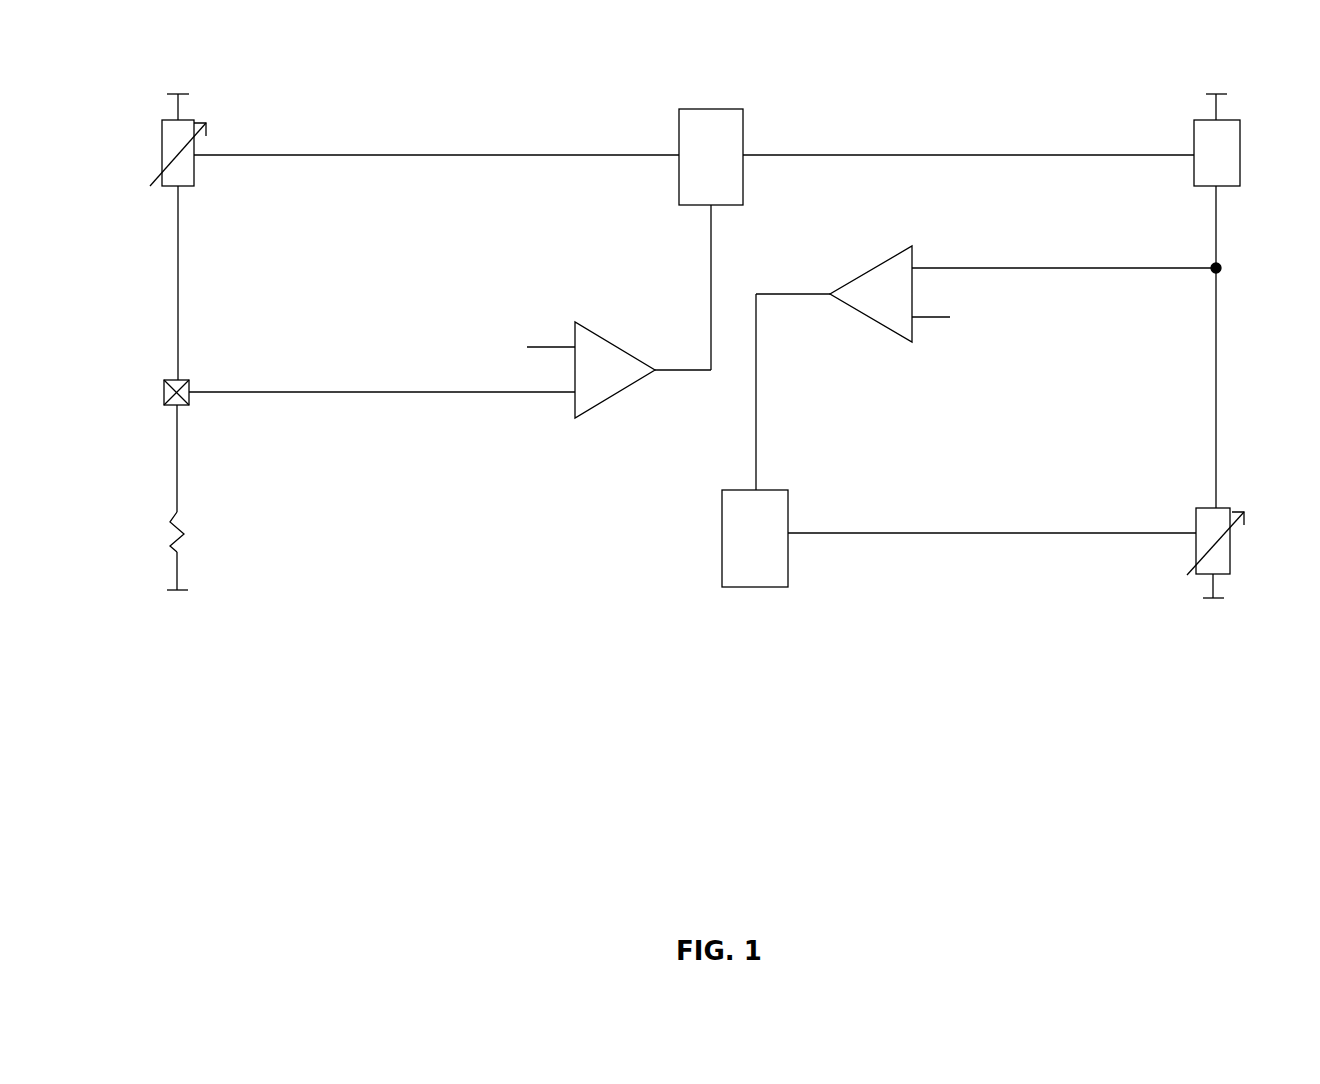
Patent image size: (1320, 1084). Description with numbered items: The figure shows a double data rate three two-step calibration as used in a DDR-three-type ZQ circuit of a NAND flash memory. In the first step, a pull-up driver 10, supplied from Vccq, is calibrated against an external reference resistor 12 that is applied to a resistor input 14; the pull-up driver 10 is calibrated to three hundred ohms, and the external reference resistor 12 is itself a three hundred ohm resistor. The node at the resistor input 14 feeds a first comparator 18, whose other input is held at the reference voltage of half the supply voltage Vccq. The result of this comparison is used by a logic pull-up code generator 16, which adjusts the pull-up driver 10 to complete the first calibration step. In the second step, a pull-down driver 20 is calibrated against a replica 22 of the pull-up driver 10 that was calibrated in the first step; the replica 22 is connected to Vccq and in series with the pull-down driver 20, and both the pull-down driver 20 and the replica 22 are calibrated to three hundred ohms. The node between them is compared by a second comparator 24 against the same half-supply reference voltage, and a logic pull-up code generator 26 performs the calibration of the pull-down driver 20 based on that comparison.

The pull-up driver 10 is at (152, 140).
The external reference resistor 12 is at (152, 532).
The resistor input 14 is at (152, 390).
The logic pull-up code generator 16 is at (722, 101).
The first comparator 18 is at (613, 335).
The pull-down driver 20 is at (1202, 624).
The replica 22 is at (1260, 133).
The second comparator 24 is at (856, 335).
The logic pull-up code generator 26 is at (751, 607).